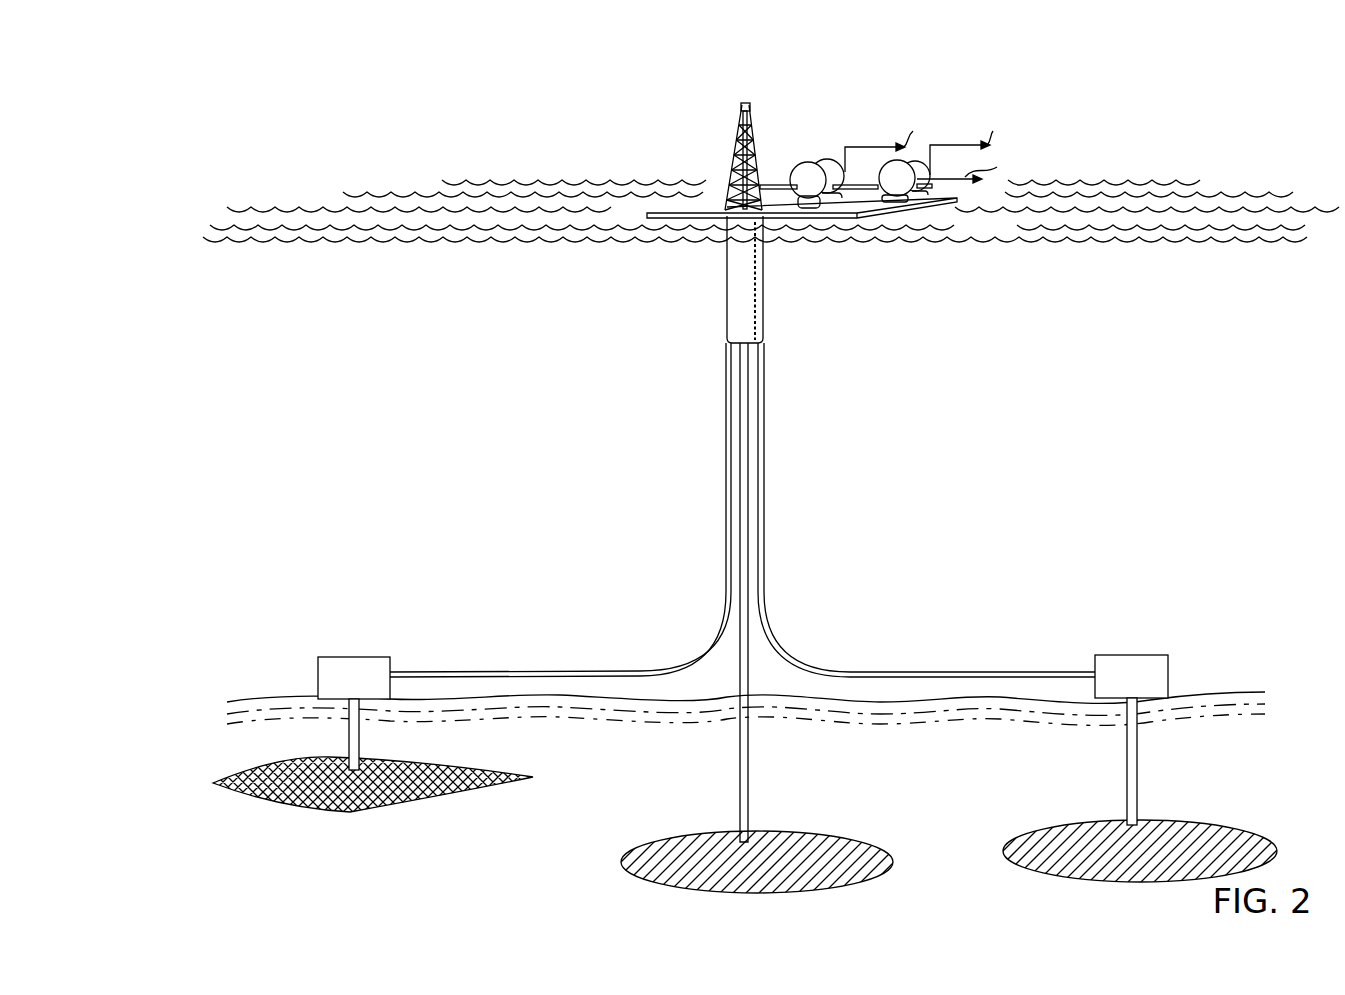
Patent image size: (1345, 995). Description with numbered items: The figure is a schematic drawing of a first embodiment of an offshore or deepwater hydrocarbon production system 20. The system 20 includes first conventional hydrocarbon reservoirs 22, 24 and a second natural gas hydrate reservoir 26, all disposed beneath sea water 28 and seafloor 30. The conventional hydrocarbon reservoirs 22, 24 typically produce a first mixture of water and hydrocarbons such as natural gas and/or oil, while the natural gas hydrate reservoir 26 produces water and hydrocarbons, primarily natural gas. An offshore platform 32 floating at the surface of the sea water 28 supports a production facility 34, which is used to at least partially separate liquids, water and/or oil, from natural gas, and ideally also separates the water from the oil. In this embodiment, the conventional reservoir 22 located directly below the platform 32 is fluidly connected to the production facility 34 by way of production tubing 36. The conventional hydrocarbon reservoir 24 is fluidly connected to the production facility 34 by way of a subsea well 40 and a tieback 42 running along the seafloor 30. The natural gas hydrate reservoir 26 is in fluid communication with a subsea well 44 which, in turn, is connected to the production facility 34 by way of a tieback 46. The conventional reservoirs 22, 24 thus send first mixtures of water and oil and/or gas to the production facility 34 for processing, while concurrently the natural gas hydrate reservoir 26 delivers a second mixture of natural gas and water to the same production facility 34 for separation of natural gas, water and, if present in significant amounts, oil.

The hydrocarbon production system 20 is at (684, 338).
The conventional hydrocarbon reservoir 22 is at (690, 833).
The conventional hydrocarbon reservoir 24 is at (1062, 830).
The natural gas hydrate reservoir 26 is at (276, 766).
The sea water 28 is at (1060, 258).
The seafloor 30 is at (1255, 692).
The offshore platform 32 is at (697, 213).
The production facility 34 is at (845, 130).
The production tubing 36 is at (747, 640).
The subsea well 40 is at (1137, 755).
The tieback 42 is at (1008, 667).
The subsea well 44 is at (358, 735).
The tieback 46 is at (470, 670).